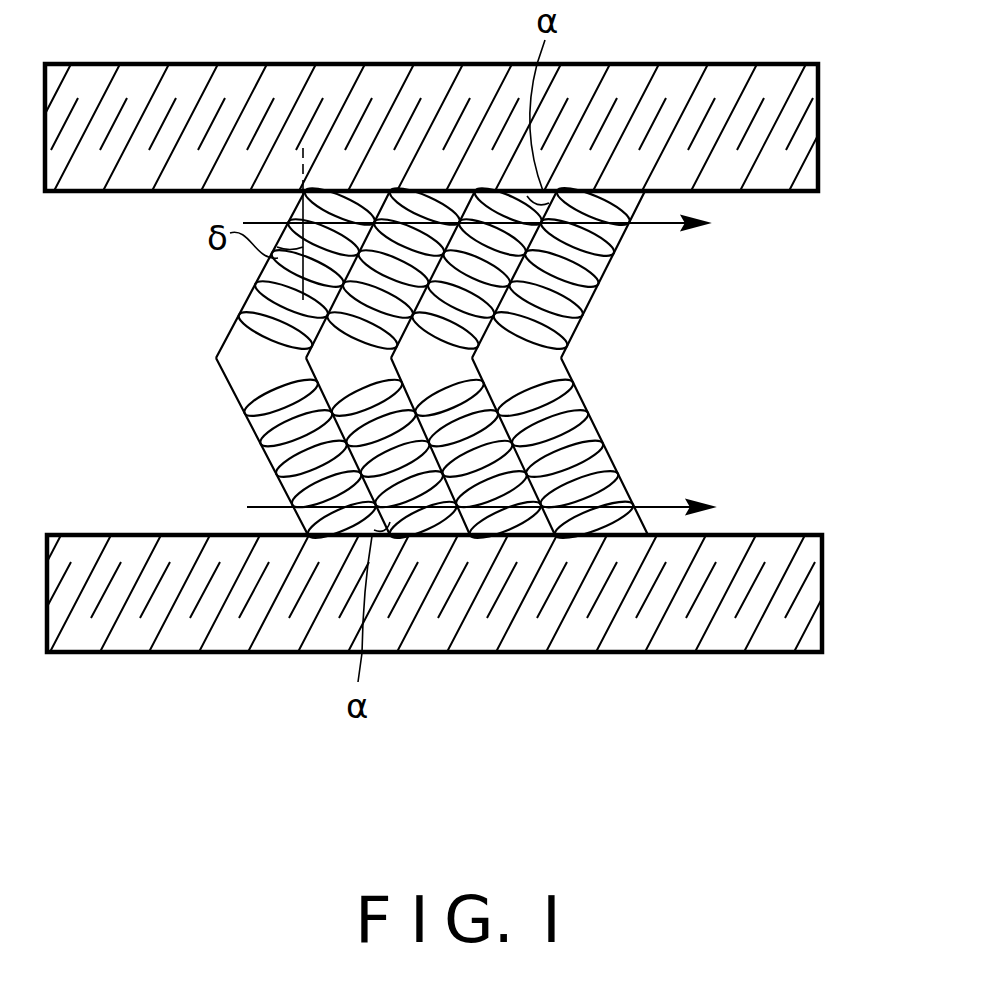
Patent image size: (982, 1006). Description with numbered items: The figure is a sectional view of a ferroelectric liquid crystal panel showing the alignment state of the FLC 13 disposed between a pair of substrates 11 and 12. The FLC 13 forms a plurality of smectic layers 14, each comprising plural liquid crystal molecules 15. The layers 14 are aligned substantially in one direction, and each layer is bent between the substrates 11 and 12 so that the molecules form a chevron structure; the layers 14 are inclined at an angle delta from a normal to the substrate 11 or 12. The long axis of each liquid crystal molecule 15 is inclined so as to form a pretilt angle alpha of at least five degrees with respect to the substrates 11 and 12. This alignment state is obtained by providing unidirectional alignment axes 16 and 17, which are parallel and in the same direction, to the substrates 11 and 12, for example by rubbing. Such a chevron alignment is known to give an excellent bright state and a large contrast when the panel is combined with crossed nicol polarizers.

The substrate 11 is at (820, 118).
The substrate 12 is at (822, 592).
The FLC 13 is at (522, 363).
The smectic layers 14 is at (250, 288).
The liquid crystal molecules 15 is at (252, 376).
The alignment axis 16 is at (663, 226).
The alignment axis 17 is at (666, 507).